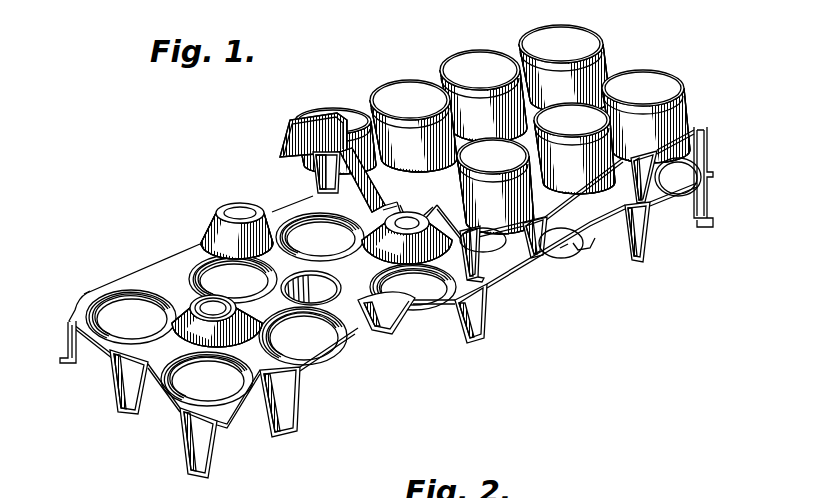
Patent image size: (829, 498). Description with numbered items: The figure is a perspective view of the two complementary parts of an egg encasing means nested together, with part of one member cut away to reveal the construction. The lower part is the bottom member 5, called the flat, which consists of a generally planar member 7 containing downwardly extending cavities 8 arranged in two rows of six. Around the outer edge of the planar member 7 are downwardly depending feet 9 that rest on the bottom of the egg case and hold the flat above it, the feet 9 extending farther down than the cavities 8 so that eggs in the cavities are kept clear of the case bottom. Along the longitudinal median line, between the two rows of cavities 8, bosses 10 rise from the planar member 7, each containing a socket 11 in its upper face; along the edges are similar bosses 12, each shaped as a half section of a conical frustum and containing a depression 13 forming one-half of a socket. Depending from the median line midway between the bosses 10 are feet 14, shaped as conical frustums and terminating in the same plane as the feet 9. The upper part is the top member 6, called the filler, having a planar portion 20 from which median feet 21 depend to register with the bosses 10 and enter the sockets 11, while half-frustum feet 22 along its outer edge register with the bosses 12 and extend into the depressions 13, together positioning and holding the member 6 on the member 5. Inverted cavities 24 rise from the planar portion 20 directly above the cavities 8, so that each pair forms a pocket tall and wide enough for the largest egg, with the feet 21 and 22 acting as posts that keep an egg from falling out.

The bottom member 5 is at (383, 305).
The top member 6 is at (488, 185).
The planar member 7 is at (104, 262).
The cavities 8 is at (668, 186).
The feet 9 is at (64, 330).
The bosses 10 is at (312, 279).
The sockets 11 is at (236, 309).
The bosses 12 is at (205, 243).
The depression 13 is at (245, 214).
The feet 14 is at (318, 287).
The planar portion 20 is at (336, 197).
The feet 21 is at (415, 210).
The feet 22 is at (492, 298).
The inverted cavities 24 is at (329, 112).